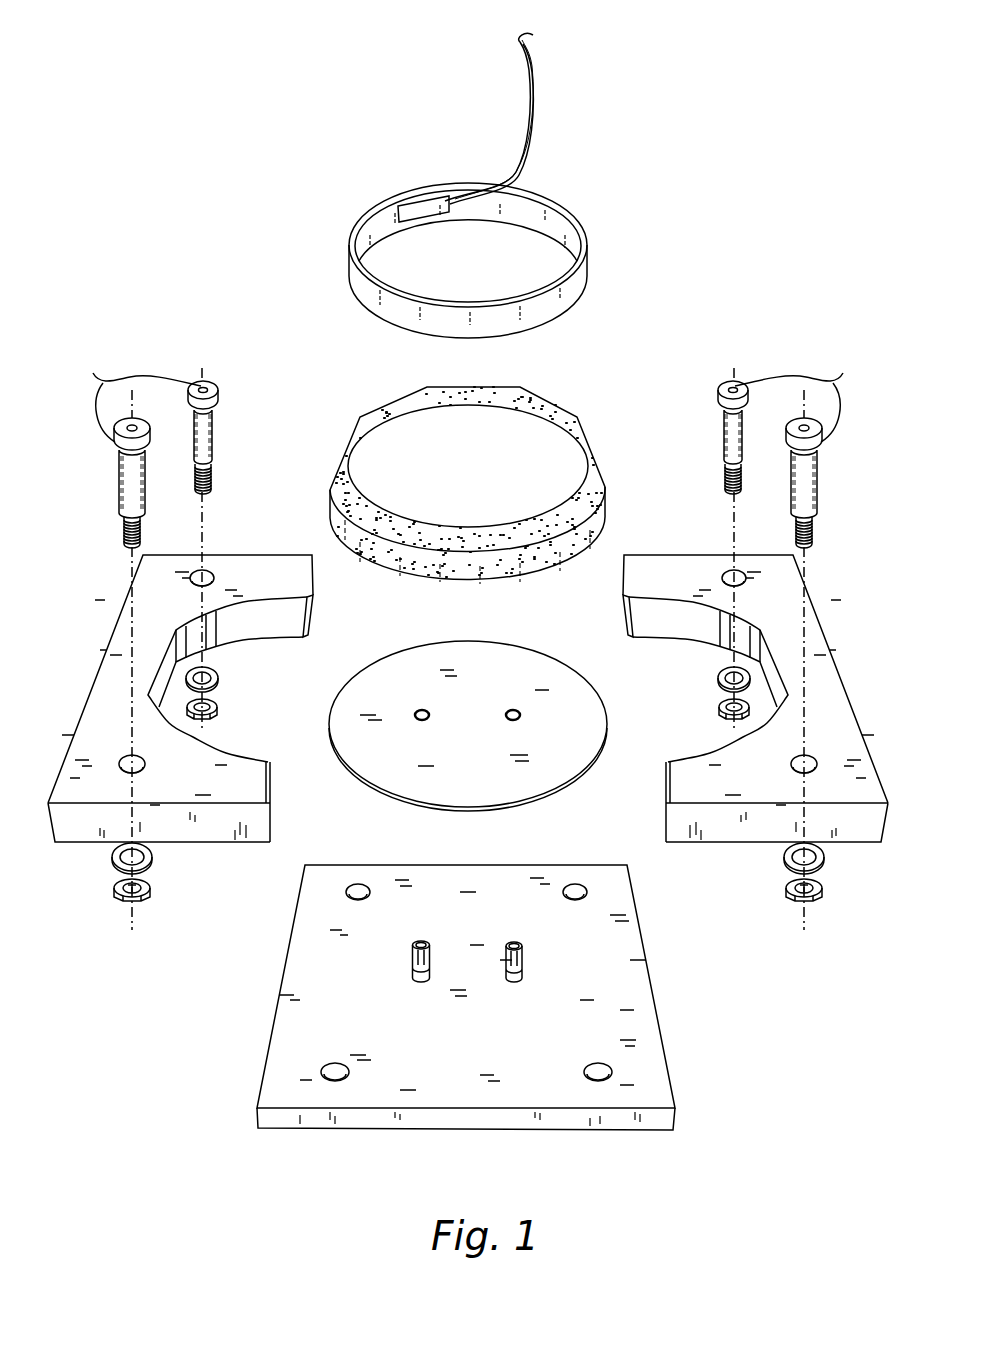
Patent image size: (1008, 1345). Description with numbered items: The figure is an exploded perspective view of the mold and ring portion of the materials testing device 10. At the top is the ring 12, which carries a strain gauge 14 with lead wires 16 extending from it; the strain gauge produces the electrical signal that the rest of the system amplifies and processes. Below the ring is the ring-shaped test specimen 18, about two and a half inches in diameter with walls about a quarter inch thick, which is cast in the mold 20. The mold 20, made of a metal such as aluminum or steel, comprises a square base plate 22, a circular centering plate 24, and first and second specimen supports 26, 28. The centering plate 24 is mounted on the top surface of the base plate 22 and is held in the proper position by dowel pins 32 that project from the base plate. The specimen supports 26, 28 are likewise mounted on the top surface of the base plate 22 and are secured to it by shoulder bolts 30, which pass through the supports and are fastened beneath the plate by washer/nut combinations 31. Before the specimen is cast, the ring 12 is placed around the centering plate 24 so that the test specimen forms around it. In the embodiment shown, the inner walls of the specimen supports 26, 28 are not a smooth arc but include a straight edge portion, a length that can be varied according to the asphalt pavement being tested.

The materials testing device 10 is at (220, 170).
The ring 12 is at (583, 233).
The strain gauge 14 is at (415, 200).
The lead wires 16 is at (533, 115).
The test specimen 18 is at (588, 446).
The mold 20 is at (474, 649).
The base plate 22 is at (315, 1128).
The centering plate 24 is at (332, 707).
The first specimen support 26 is at (95, 673).
The second specimen support 28 is at (823, 628).
The shoulder bolts 30 is at (475, 445).
The washer/nut combination 31 is at (113, 853).
The dowel pins 32 is at (513, 978).